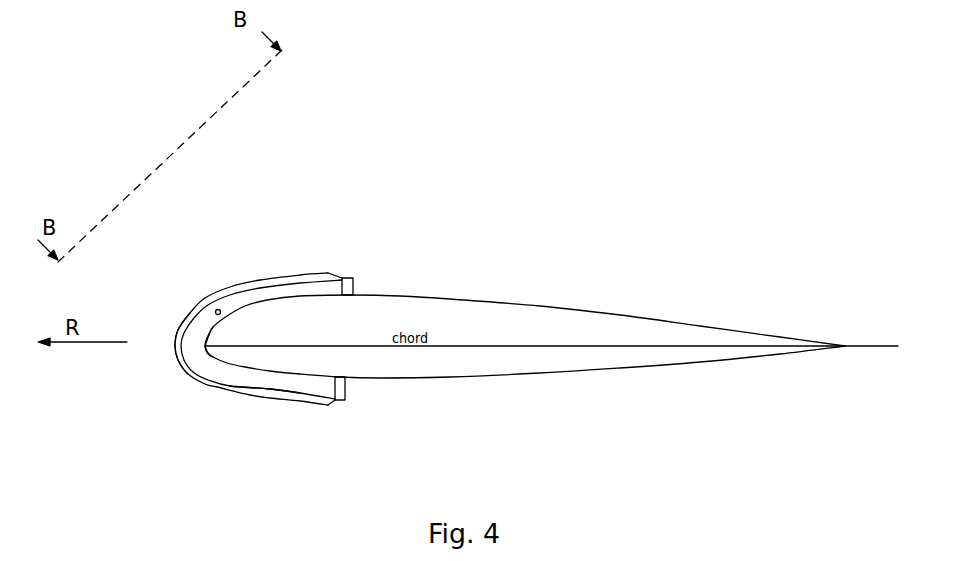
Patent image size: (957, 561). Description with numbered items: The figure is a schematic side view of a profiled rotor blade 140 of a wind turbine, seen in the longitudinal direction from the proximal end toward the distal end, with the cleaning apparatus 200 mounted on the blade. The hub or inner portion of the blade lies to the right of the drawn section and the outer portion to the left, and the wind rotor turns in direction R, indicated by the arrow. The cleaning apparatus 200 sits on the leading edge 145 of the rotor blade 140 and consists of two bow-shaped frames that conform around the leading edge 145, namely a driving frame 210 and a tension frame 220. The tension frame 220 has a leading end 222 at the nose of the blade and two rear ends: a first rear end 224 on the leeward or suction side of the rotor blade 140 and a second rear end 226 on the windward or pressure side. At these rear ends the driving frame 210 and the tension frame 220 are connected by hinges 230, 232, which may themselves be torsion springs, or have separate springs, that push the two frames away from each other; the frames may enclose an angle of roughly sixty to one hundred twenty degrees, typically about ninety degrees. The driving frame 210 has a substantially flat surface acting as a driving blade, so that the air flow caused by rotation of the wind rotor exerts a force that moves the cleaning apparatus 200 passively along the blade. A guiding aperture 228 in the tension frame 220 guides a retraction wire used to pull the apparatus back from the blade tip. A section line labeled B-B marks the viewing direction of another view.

The rotor blade 140 is at (540, 305).
The leading edge 145 is at (193, 347).
The cleaning apparatus 200 is at (392, 182).
The driving frame 210 is at (337, 272).
The tension frame 220 is at (287, 292).
The leading end of the tension frame 222 is at (178, 348).
The first rear end of the tension frame 224 is at (335, 297).
The second rear end of the tension frame 226 is at (309, 385).
The guiding aperture 228 is at (218, 309).
The hinge 230 is at (348, 283).
The hinge 232 is at (325, 398).